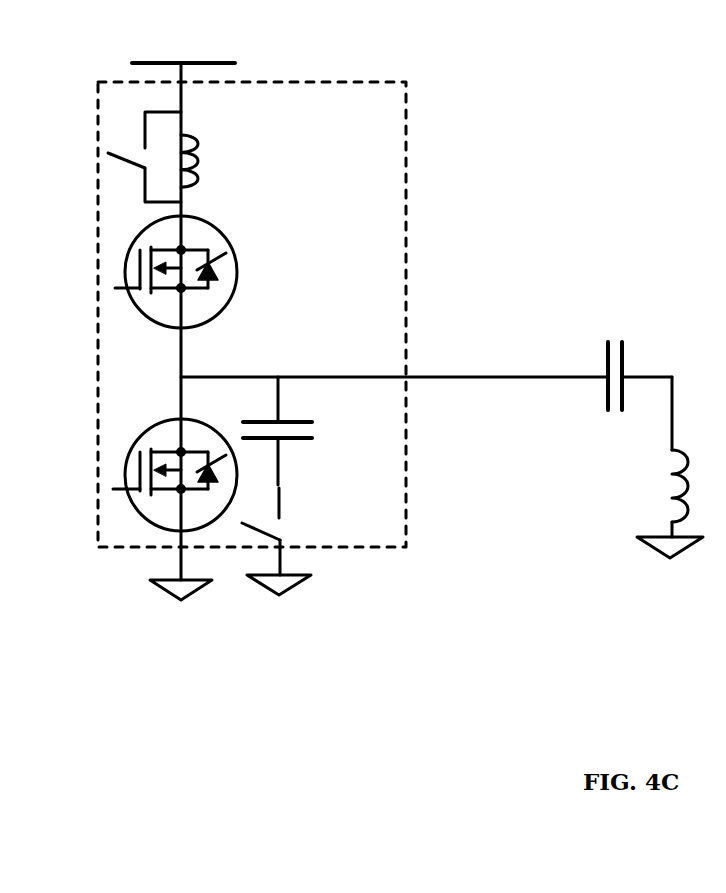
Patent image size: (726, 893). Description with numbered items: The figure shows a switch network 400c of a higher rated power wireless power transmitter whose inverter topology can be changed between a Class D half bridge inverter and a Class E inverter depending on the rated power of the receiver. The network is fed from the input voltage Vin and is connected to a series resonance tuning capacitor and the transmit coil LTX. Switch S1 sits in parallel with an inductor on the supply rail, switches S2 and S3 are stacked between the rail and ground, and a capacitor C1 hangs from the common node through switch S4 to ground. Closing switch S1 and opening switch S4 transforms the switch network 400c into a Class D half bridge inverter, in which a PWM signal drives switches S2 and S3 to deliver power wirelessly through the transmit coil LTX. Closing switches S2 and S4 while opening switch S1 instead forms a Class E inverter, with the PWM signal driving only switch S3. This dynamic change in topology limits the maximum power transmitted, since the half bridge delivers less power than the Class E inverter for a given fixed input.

The switch network 400c is at (383, 68).
The input voltage Vin is at (183, 47).
The switch S1 is at (153, 157).
The switch S2 is at (164, 272).
The switch S3 is at (157, 475).
The switch S4 is at (284, 541).
The capacitor C1 is at (300, 431).
The transmit coil LTX is at (664, 467).